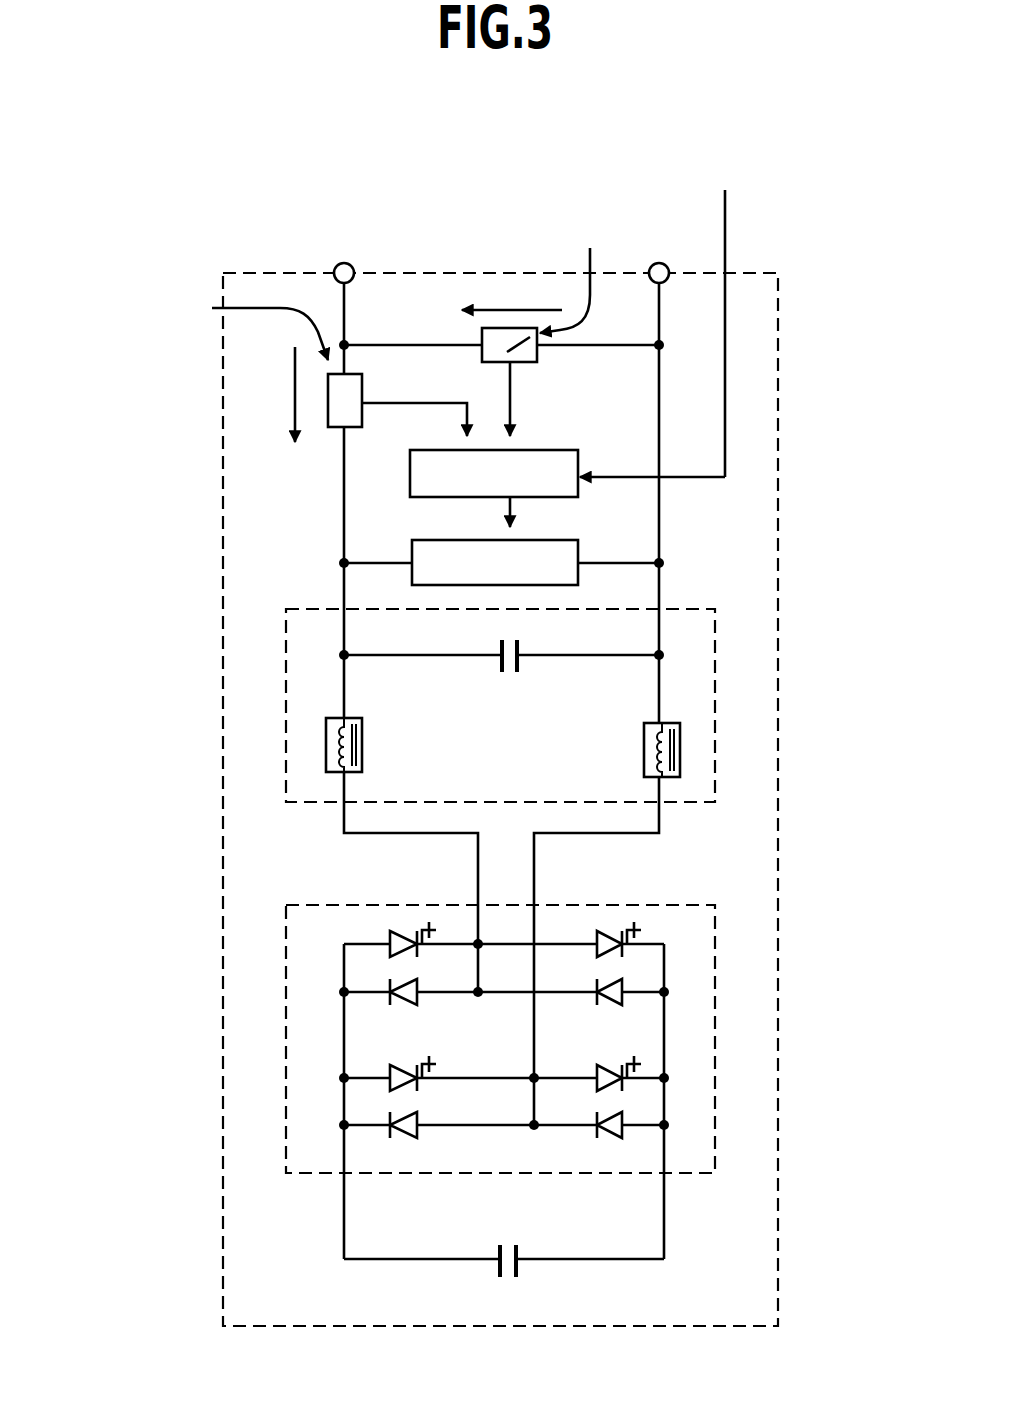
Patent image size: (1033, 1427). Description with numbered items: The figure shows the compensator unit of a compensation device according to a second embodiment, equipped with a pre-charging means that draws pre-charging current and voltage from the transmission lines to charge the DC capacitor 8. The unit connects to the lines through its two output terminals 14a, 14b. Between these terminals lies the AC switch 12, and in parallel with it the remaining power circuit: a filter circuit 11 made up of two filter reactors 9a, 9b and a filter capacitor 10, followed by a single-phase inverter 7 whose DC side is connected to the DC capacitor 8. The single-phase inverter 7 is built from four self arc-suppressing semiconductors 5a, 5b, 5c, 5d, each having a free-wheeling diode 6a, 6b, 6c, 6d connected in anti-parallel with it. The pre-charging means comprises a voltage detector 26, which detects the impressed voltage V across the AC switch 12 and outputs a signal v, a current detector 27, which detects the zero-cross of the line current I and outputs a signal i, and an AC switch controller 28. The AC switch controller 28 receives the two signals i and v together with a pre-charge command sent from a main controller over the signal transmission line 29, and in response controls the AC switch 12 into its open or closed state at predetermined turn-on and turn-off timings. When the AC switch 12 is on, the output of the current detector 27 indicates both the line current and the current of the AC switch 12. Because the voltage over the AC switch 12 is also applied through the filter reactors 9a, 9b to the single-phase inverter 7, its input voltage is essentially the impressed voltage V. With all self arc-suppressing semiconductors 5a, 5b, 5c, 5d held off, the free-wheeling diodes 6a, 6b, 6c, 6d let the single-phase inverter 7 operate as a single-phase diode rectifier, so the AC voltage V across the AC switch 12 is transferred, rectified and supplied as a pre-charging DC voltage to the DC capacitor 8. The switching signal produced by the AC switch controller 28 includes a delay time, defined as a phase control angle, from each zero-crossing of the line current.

The output terminal 14a is at (344, 262).
The output terminal 14b is at (659, 262).
The current detector 27 is at (362, 372).
The voltage detector 26 is at (537, 362).
The AC switch controller 28 is at (560, 450).
The AC switch 12 is at (555, 540).
The signal transmission line 29 is at (687, 478).
The filter circuit 11 is at (715, 609).
The filter capacitor 10 is at (510, 672).
The filter reactor 9a is at (362, 752).
The filter reactor 9b is at (644, 760).
The single-phase inverter 7 is at (690, 905).
The self arc-suppressing semiconductor 5a is at (400, 929).
The self arc-suppressing semiconductor 5b is at (608, 931).
The self arc-suppressing semiconductor 5c is at (403, 1064).
The self arc-suppressing semiconductor 5d is at (608, 1066).
The free-wheeling diode 6a is at (405, 1004).
The free-wheeling diode 6b is at (612, 1004).
The free-wheeling diode 6c is at (405, 1140).
The free-wheeling diode 6d is at (612, 1138).
The DC capacitor 8 is at (508, 1245).